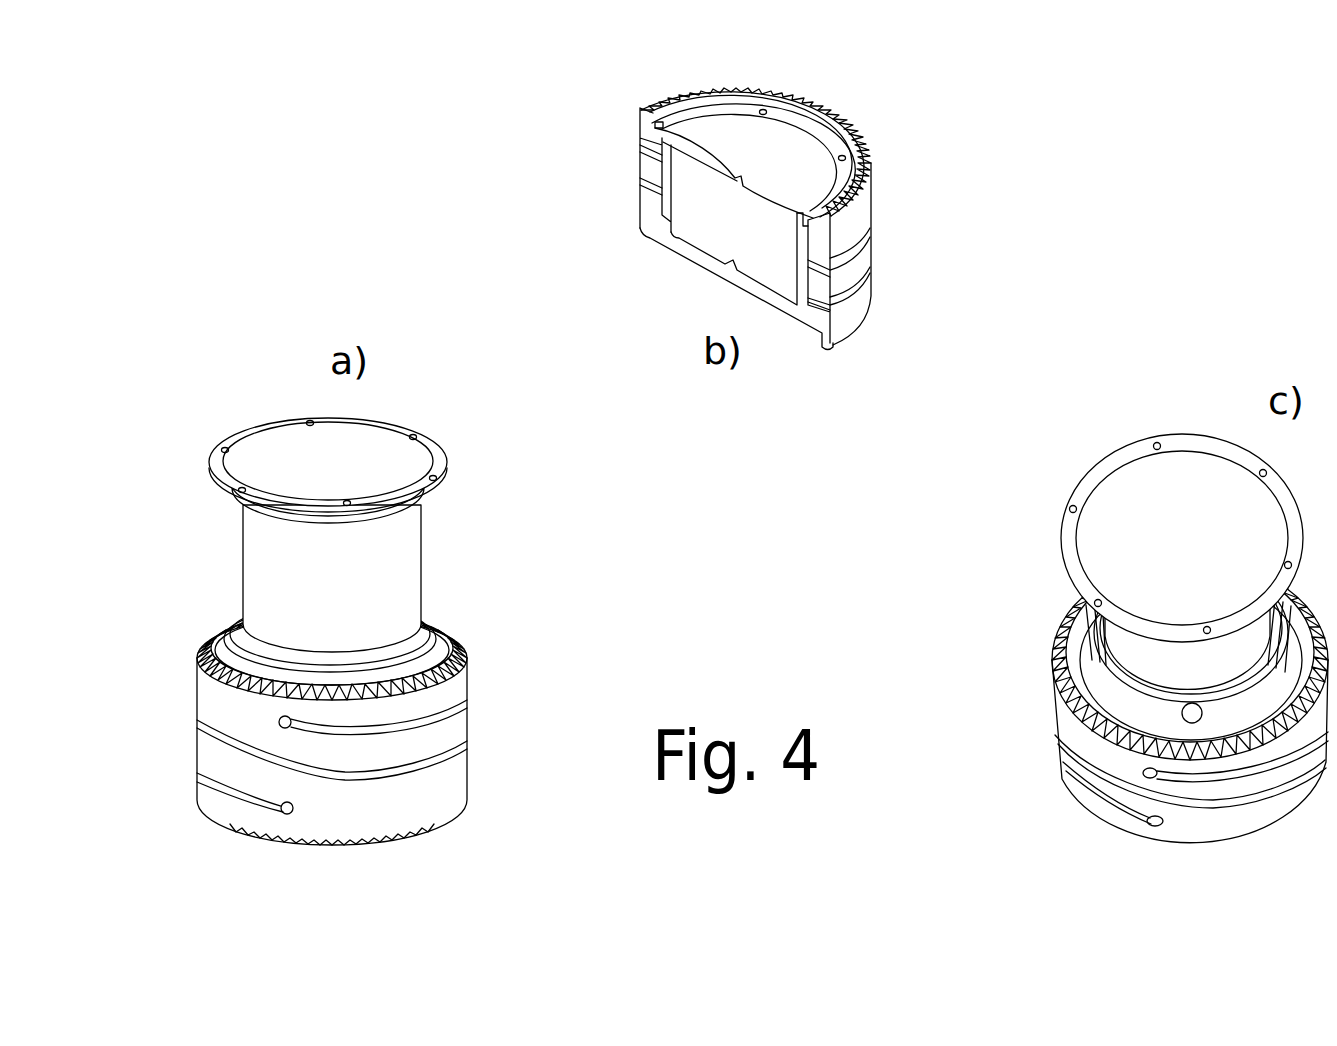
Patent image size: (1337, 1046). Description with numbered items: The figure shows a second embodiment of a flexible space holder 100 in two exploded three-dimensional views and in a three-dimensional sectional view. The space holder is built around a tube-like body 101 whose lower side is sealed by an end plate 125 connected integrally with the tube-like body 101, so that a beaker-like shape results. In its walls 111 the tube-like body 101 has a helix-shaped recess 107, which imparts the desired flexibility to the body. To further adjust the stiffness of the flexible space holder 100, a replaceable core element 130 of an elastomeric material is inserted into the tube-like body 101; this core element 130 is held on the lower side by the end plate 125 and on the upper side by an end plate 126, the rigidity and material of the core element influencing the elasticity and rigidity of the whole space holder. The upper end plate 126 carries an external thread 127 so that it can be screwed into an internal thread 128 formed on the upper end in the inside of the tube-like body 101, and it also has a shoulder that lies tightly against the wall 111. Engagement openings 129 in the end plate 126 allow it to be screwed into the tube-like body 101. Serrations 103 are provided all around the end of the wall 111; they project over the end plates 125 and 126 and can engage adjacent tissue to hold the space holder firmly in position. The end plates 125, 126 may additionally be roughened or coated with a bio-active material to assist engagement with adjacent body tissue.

The flexible space holder 100 is at (881, 186).
The tube-like body 101 is at (465, 770).
The serrations 103 is at (670, 95).
The helix-shaped recess 107 is at (871, 280).
The walls 111 is at (874, 238).
The end plate 125 is at (700, 267).
The end plate 126 is at (740, 157).
The external thread 127 is at (657, 128).
The internal thread 128 is at (640, 153).
The engagement openings 129 is at (228, 440).
The replaceable core element 130 is at (410, 578).